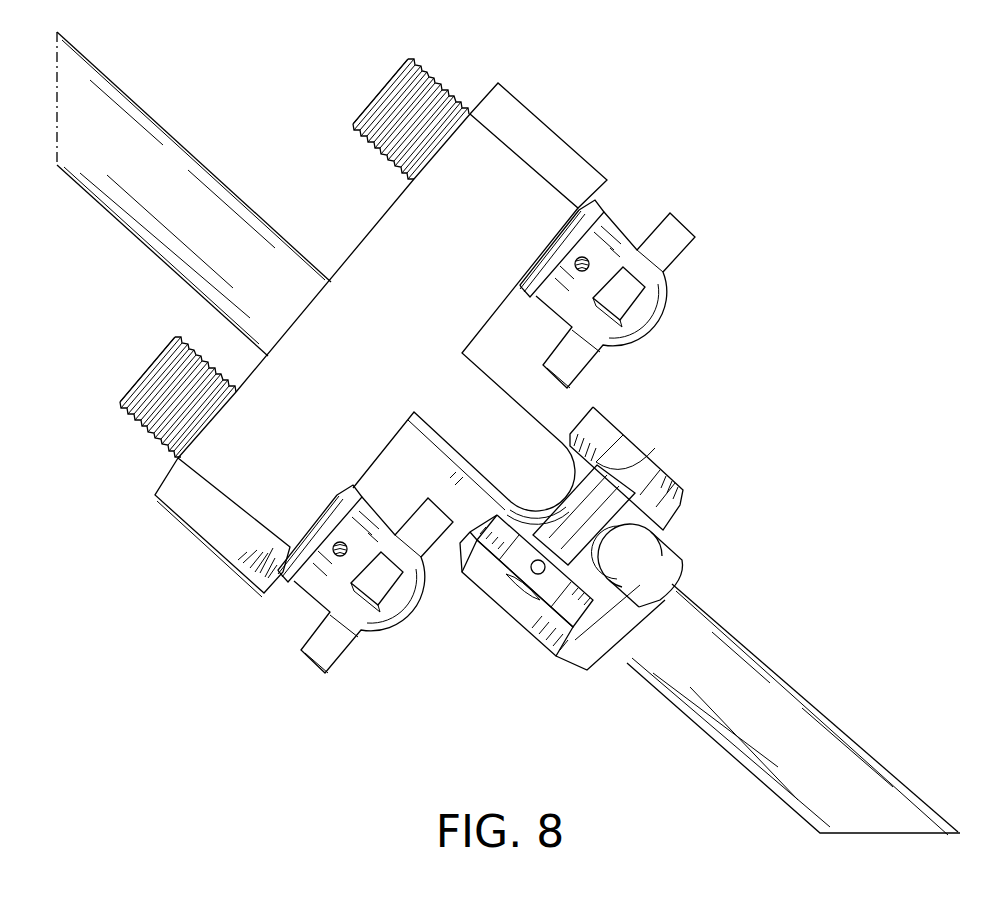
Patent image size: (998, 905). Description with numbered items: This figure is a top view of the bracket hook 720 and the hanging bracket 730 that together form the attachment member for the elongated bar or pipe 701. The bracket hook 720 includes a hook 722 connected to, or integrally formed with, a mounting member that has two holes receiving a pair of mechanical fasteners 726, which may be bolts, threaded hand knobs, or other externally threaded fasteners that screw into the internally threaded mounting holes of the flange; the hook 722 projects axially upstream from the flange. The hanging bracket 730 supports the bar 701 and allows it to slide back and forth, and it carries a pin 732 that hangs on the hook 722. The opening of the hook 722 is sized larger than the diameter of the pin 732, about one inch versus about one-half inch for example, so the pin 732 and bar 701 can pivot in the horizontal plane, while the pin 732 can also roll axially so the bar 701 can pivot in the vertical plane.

The elongated bar or pipe 701 is at (194, 206).
The bracket hook 720 is at (405, 364).
The hook 722 is at (677, 547).
The mechanical fasteners 726 is at (143, 430).
The hanging bracket 730 is at (528, 608).
The pin 732 is at (640, 467).